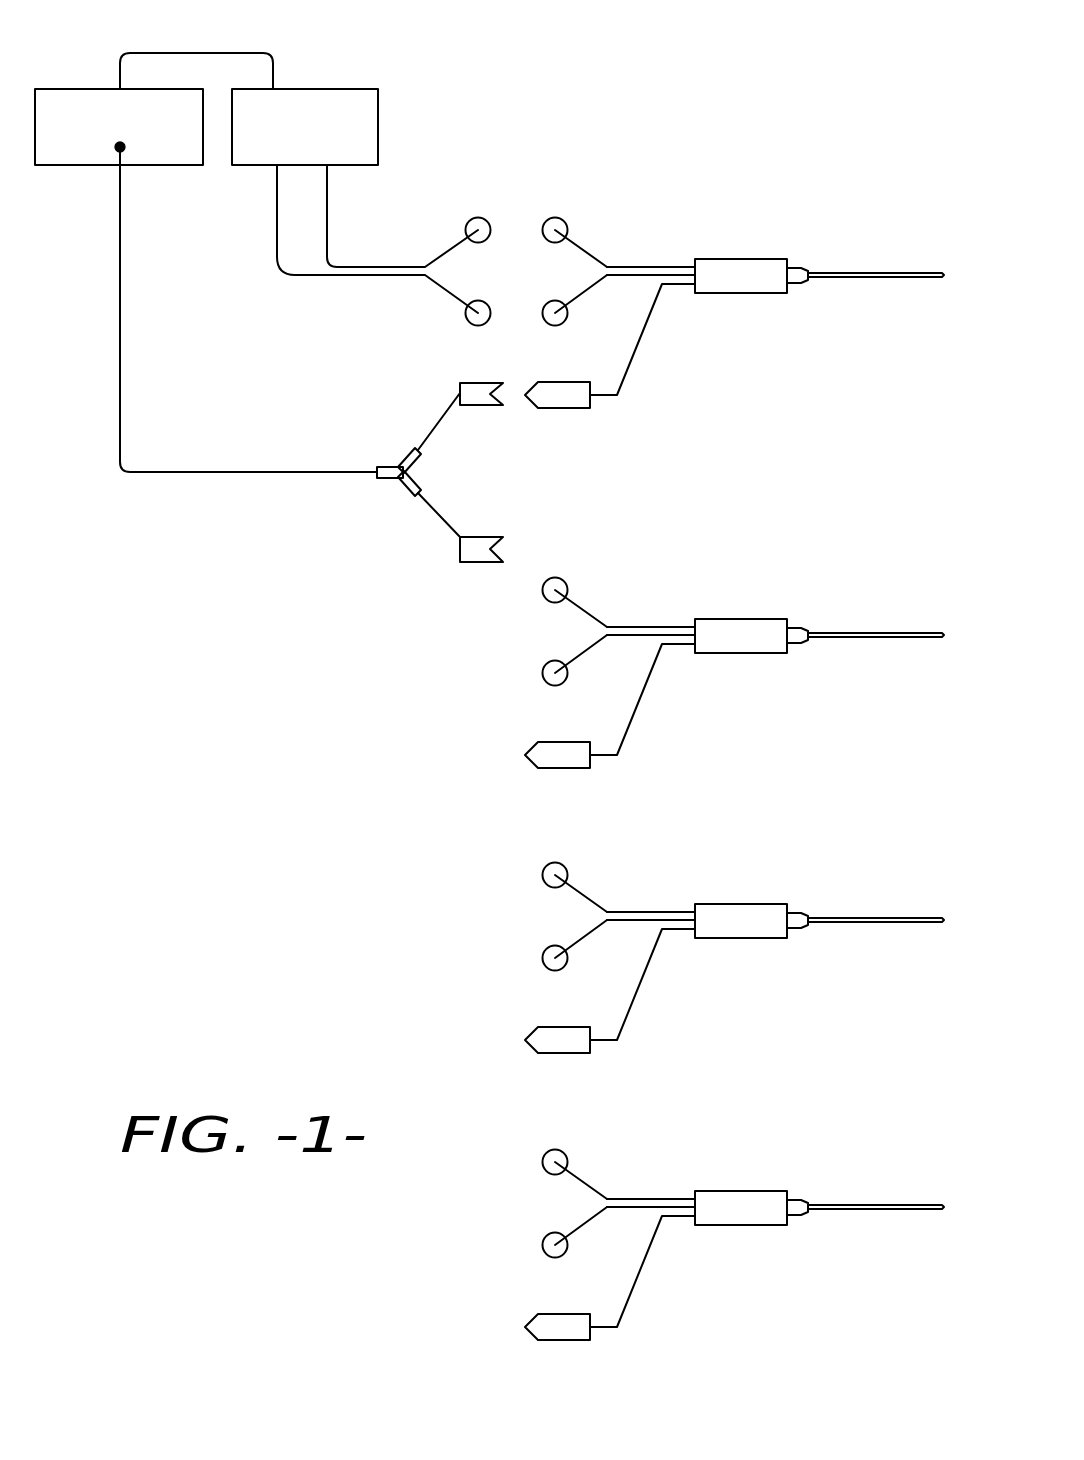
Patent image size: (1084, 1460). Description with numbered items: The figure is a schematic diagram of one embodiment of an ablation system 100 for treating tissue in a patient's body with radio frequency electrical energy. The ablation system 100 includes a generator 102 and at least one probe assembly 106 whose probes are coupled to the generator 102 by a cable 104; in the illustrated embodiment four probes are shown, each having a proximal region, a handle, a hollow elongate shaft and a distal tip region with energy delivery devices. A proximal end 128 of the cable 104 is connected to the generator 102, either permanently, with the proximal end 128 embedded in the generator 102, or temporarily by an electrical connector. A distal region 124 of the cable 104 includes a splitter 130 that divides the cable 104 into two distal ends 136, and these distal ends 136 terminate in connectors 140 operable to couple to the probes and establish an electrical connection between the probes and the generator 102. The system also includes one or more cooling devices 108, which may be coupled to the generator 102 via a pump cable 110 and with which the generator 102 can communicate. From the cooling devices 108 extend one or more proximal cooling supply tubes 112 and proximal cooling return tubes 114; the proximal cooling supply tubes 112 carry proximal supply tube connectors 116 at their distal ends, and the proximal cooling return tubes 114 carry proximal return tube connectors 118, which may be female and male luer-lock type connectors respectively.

The ablation system 100 is at (228, 813).
The generator 102 is at (85, 89).
The cable 104 is at (242, 477).
The probe assembly 106 is at (759, 135).
The cooling device 108 is at (313, 89).
The pump cable 110 is at (193, 52).
The proximal cooling supply tube 112 is at (350, 266).
The proximal cooling return tube 114 is at (327, 280).
The proximal supply tube connector 116 is at (478, 217).
The proximal return tube connector 118 is at (478, 326).
The distal region of the cable 124 is at (417, 472).
The proximal end of the cable 128 is at (114, 150).
The splitter 130 is at (392, 462).
The distal ends of the cable 136 is at (438, 428).
The connectors 140 is at (483, 405).